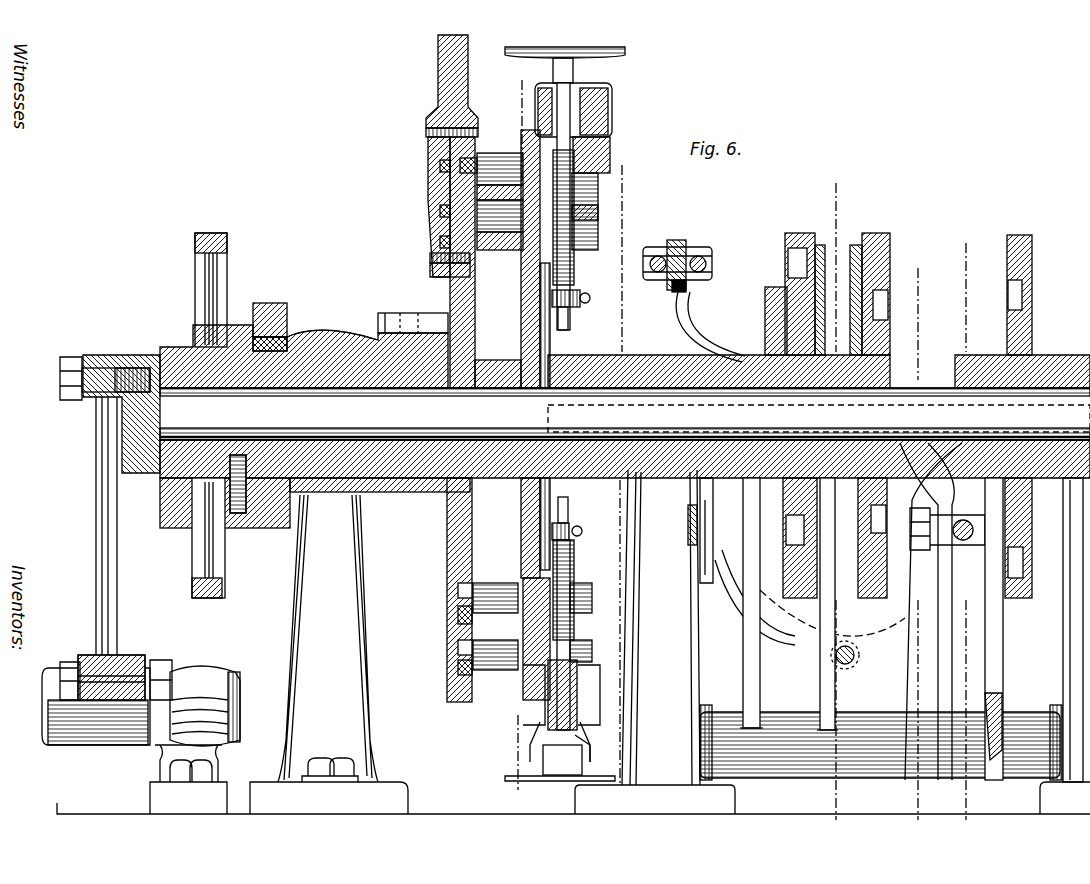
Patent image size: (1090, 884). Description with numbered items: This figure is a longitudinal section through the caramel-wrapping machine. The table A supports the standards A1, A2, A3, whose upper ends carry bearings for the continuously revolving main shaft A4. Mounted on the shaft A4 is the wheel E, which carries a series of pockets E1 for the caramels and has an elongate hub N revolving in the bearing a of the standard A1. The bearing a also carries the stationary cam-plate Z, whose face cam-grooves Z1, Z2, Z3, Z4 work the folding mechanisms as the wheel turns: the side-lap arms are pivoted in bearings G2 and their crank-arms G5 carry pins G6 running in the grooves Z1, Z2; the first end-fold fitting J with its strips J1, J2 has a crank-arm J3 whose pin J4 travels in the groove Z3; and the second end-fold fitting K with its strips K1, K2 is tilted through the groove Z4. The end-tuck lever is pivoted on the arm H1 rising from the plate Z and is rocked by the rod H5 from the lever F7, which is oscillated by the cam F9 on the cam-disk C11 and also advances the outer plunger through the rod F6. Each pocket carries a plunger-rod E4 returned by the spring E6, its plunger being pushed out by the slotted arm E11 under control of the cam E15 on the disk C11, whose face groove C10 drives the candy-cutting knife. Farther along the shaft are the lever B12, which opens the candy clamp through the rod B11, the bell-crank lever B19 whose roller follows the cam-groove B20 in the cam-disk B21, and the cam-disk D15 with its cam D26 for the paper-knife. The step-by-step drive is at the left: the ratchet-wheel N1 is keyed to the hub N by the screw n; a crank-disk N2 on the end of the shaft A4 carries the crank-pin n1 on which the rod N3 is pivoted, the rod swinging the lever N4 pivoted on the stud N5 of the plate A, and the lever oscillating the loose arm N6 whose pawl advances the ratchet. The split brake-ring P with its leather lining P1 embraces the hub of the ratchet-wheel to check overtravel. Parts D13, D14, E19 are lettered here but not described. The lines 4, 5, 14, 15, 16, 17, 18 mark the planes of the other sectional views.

The table A is at (472, 822).
The standard A1 is at (329, 654).
The standard A2 is at (655, 642).
The standard A3 is at (1066, 686).
The main shaft A4 is at (1038, 414).
The elongate hub N is at (412, 464).
The ratchet-wheel N1 is at (207, 556).
The crank-disk N2 is at (127, 461).
The rod N3 is at (97, 433).
The lever N4 is at (92, 667).
The projecting stud N5 is at (194, 760).
The arm N6 is at (167, 480).
The screw n is at (230, 495).
The crank-pin n1 is at (134, 368).
The split ring P is at (270, 304).
The lining P1 is at (290, 333).
The bearing a is at (326, 335).
The arm H1 is at (438, 74).
The rod H5 is at (668, 250).
The fitting J is at (580, 228).
The projecting strip J1 is at (592, 102).
The projecting strip J2 is at (537, 97).
The crank-arm J3 is at (437, 178).
The projecting pin J4 is at (512, 139).
The bearings G2 is at (530, 258).
The crank-arm G5 is at (440, 241).
The projecting pin G6 is at (440, 208).
The cam-plate Z is at (462, 308).
The cam-groove Z1 is at (448, 218).
The cam-groove Z2 is at (445, 310).
The cam-groove Z3 is at (440, 166).
The cam-groove Z4 is at (458, 648).
The wheel E is at (536, 302).
The pocket E1 is at (560, 763).
The plunger-rod E4 is at (570, 322).
The spring E6 is at (580, 291).
The arm E11 is at (772, 618).
The cam E15 is at (821, 246).
The rod E19 is at (815, 673).
The fitting K is at (523, 691).
The folding-strip K1 is at (586, 734).
The folding-strip K2 is at (532, 730).
The rod F6 is at (700, 256).
The lever F7 is at (690, 335).
The cam F9 is at (779, 288).
The cam-groove C10 is at (790, 540).
The cam-disk C11 is at (800, 234).
The lever D13 is at (938, 630).
The slot D14 is at (885, 309).
The cam-disk D15 is at (882, 233).
The cam D26 is at (857, 246).
The rod B11 is at (855, 656).
The lever B12 is at (900, 608).
The lever B19 is at (1002, 661).
The cam-groove B20 is at (1012, 553).
The cam-disk B21 is at (1032, 256).
The section line 4 4 is at (642, 175).
The section line 5 5 is at (663, 503).
The section line 14 14 is at (494, 73).
The section line 15 15 is at (939, 271).
The section line 16 16 is at (248, 350).
The section line 17 17 is at (985, 240).
The section line 18 18 is at (855, 183).